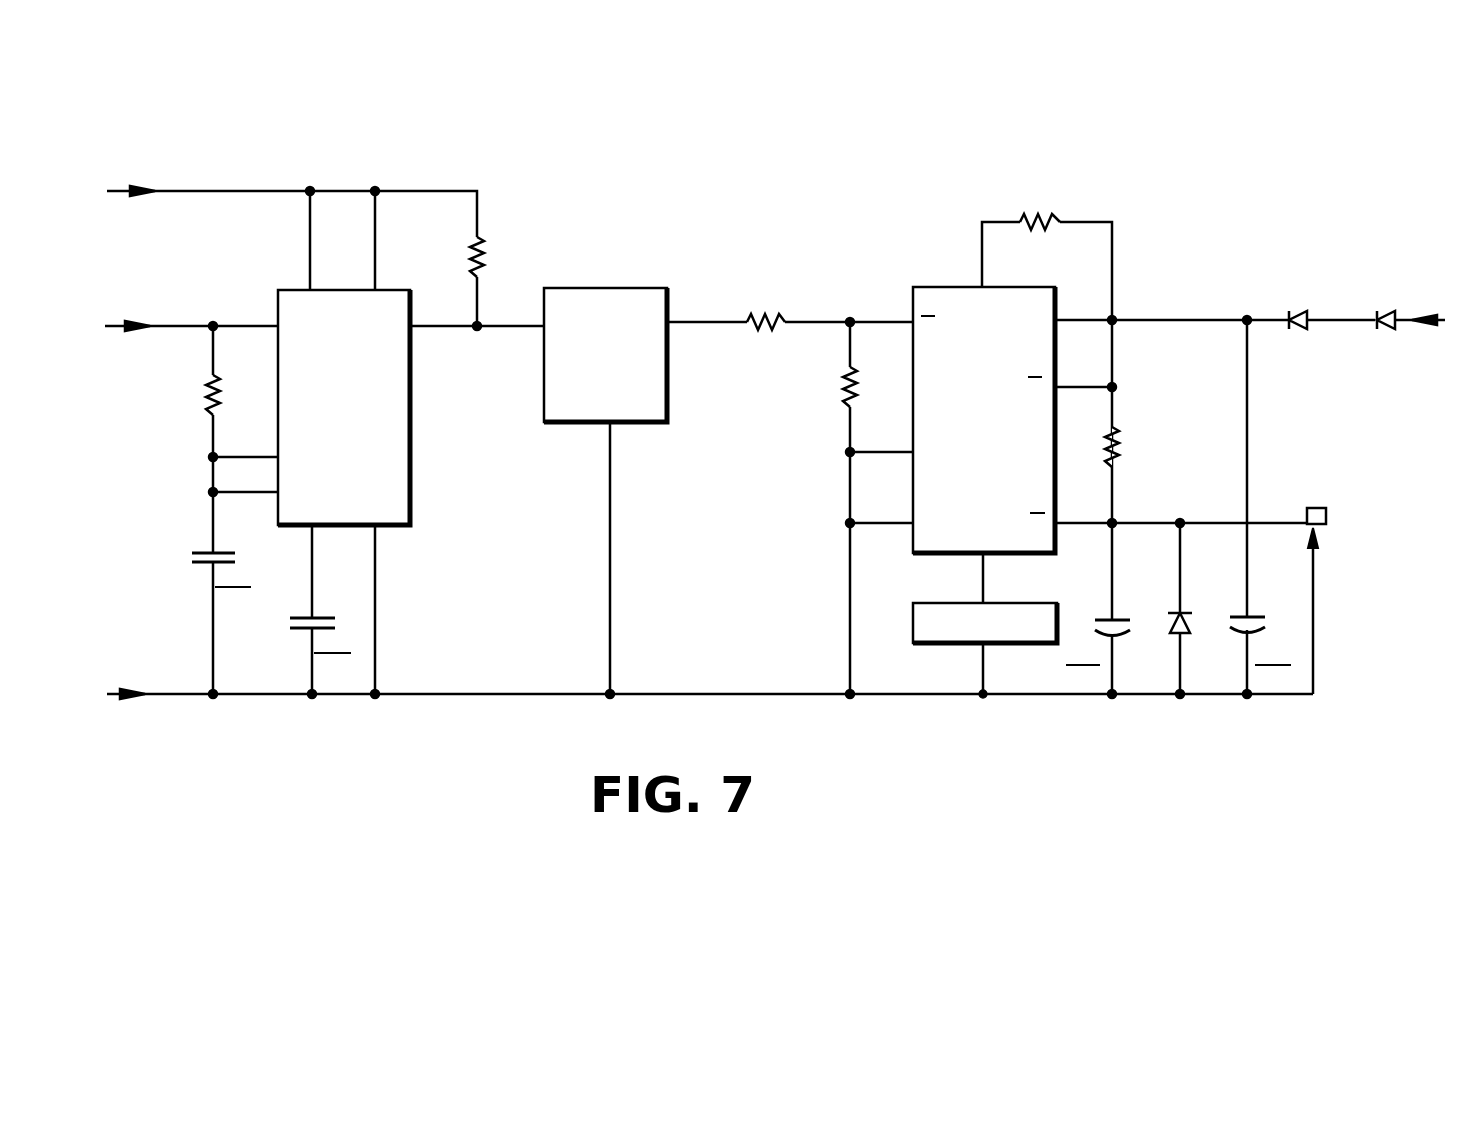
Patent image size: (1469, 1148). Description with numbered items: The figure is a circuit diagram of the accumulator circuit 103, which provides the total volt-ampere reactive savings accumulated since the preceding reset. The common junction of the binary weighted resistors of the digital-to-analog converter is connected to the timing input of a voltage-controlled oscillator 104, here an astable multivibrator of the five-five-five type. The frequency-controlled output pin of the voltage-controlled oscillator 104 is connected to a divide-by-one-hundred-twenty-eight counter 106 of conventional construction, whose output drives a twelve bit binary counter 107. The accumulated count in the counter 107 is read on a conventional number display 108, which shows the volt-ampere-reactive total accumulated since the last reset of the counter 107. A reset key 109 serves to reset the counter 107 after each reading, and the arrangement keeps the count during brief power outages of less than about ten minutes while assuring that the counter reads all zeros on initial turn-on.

The accumulator circuit 103 is at (1262, 196).
The voltage-controlled oscillator VCO 104 is at (411, 397).
The divide-by-128 counter 106 is at (668, 397).
The twelve bit binary counter 107 is at (930, 285).
The display 108 is at (912, 620).
The reset key 109 is at (1330, 531).